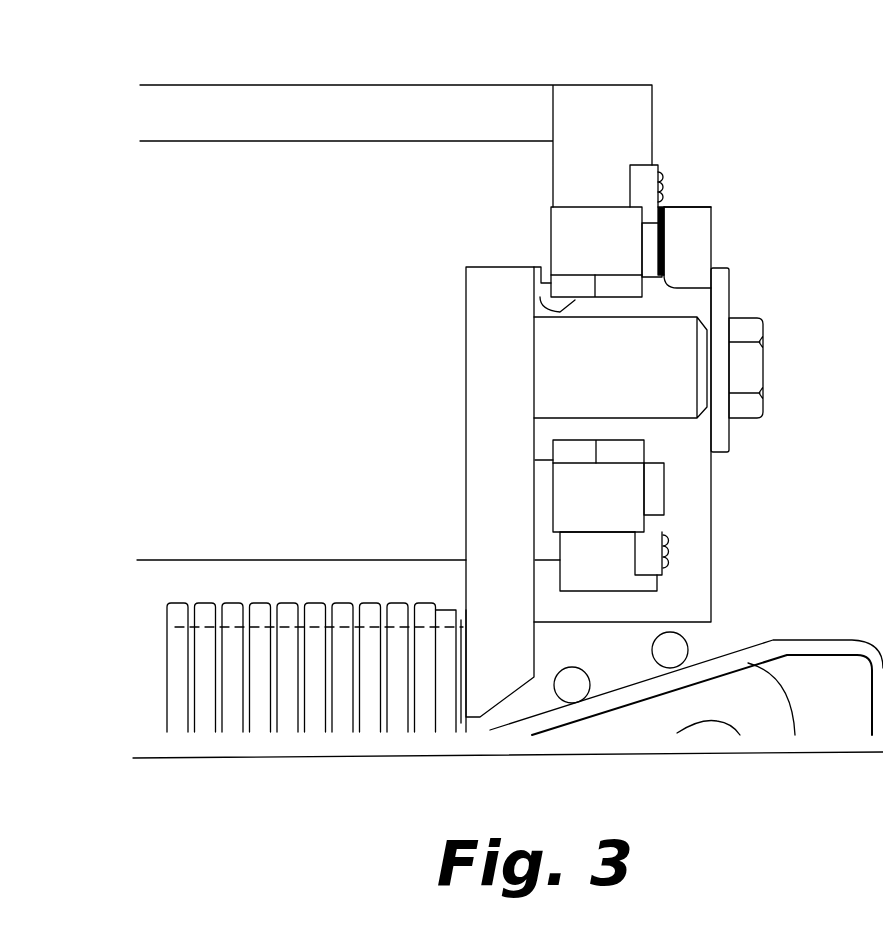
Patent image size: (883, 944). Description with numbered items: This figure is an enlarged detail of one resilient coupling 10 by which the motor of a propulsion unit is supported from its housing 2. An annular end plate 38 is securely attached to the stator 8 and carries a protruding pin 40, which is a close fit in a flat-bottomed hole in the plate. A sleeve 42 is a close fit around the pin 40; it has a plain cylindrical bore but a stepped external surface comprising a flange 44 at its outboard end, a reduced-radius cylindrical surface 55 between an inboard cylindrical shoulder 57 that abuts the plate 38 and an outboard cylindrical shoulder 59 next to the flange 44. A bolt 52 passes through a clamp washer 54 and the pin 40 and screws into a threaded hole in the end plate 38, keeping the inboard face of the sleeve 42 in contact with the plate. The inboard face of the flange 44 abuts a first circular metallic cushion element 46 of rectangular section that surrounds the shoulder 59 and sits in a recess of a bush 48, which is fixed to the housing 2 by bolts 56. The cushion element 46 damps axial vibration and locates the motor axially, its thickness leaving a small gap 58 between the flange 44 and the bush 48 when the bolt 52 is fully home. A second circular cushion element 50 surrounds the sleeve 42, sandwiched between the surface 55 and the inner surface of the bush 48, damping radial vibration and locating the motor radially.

The housing 2 is at (449, 100).
The stator 8 is at (315, 613).
The resilient coupling 10 is at (782, 198).
The annular end plate 38 is at (482, 427).
The pin 40 is at (550, 344).
The sleeve 42 is at (697, 262).
The flange 44 is at (718, 230).
The first circular metallic cushion element 46 is at (618, 288).
The bush 48 is at (590, 232).
The second circular cushion element 50 is at (647, 245).
The bolt 52 is at (755, 365).
The clamp washer 54 is at (722, 295).
The cylindrical surface 55 is at (550, 305).
The bolts 56 is at (668, 180).
The inboard cylindrical shoulder 57 is at (543, 274).
The gap 58 is at (667, 532).
The outboard cylindrical shoulder 59 is at (680, 288).